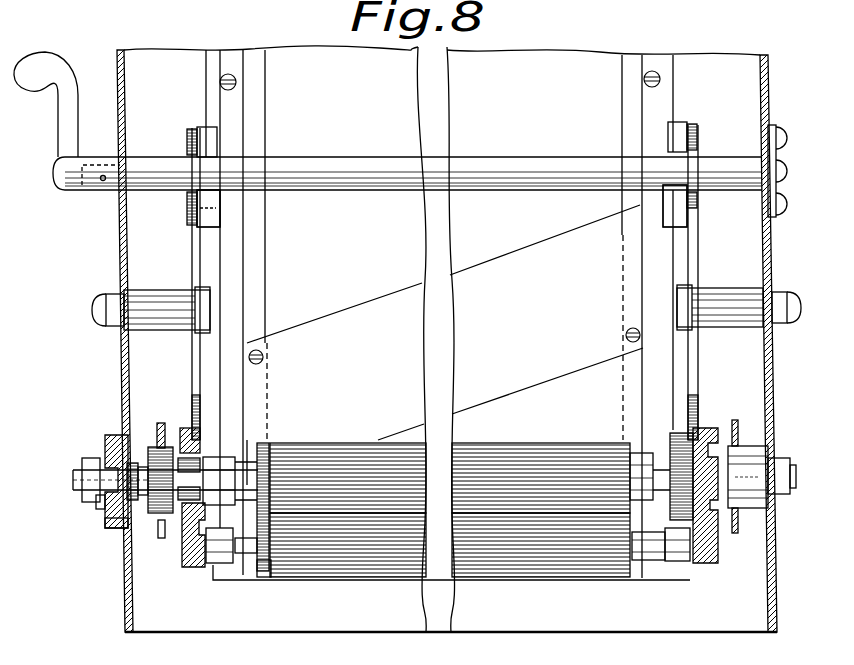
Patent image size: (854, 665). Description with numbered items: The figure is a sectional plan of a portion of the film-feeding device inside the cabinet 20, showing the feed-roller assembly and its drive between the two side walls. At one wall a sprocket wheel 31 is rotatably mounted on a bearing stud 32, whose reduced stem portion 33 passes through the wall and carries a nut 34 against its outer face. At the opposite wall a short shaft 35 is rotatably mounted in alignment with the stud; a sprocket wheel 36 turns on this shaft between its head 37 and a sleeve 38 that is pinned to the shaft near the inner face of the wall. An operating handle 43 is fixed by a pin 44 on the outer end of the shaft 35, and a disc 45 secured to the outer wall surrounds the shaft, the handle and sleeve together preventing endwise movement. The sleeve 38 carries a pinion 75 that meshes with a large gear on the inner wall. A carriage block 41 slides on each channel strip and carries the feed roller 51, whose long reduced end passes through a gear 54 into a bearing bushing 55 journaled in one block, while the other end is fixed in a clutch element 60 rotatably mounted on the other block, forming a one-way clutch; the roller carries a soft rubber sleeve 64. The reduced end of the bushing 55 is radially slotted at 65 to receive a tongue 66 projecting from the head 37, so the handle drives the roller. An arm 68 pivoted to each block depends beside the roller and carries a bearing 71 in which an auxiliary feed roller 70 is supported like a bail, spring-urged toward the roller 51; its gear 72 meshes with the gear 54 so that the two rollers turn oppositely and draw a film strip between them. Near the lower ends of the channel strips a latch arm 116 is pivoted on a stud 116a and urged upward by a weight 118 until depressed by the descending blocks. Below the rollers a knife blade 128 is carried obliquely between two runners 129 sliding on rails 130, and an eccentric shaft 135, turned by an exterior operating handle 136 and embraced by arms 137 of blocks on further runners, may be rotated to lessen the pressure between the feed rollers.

The cabinet 20 is at (118, 252).
The sprocket wheel 31 is at (735, 533).
The bearing stud 32 is at (745, 458).
The reduced stem portion 33 is at (790, 490).
The nut 34 is at (780, 455).
The short shaft 35 is at (73, 477).
The sprocket wheel 36 is at (162, 420).
The head 37 is at (180, 513).
The sleeve 38 is at (147, 513).
The carriage block 41 is at (710, 563).
The operating handle 43 is at (105, 507).
The pin 44 is at (95, 456).
The disc 45 is at (115, 522).
The feed roller 51 is at (327, 448).
The gear 54 is at (270, 447).
The bearing bushing 55 is at (230, 458).
The clutch element 60 is at (672, 437).
The soft rubber sleeve 64 is at (393, 447).
The radial slot 65 is at (217, 453).
The tongue 66 is at (188, 480).
The arm 68 is at (693, 561).
The auxiliary feed roller 70 is at (403, 552).
The bearing 71 is at (677, 558).
The gear 72 is at (267, 575).
The pinion 75 is at (128, 450).
The latch arm 116 is at (698, 252).
The stud 116a is at (723, 337).
The weight 118 is at (668, 218).
The knife blade 128 is at (573, 365).
The runner 129 is at (620, 197).
The rail 130 is at (630, 400).
The eccentric shaft 135 is at (518, 157).
The operating handle 136 is at (67, 107).
The arm 137 is at (699, 193).